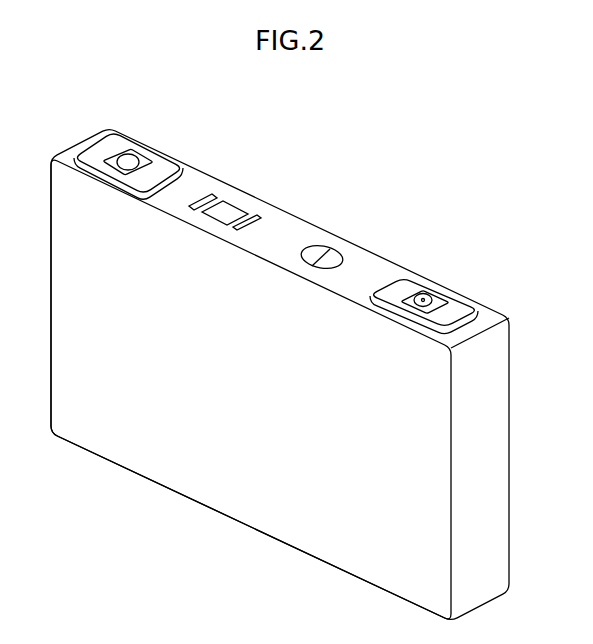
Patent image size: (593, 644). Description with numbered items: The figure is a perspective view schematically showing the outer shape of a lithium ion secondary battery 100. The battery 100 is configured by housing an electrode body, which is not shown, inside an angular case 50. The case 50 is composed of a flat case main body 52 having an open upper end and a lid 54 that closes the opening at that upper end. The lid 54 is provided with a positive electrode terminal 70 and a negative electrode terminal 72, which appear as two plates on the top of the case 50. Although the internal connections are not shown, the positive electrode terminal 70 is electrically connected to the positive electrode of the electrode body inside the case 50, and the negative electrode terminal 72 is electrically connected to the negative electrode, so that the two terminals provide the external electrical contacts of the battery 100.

The lithium ion secondary battery 100 is at (512, 115).
The case 50 is at (293, 500).
The case main body 52 is at (201, 463).
The lid 54 is at (278, 222).
The positive electrode terminal 70 is at (432, 301).
The negative electrode terminal 72 is at (139, 159).